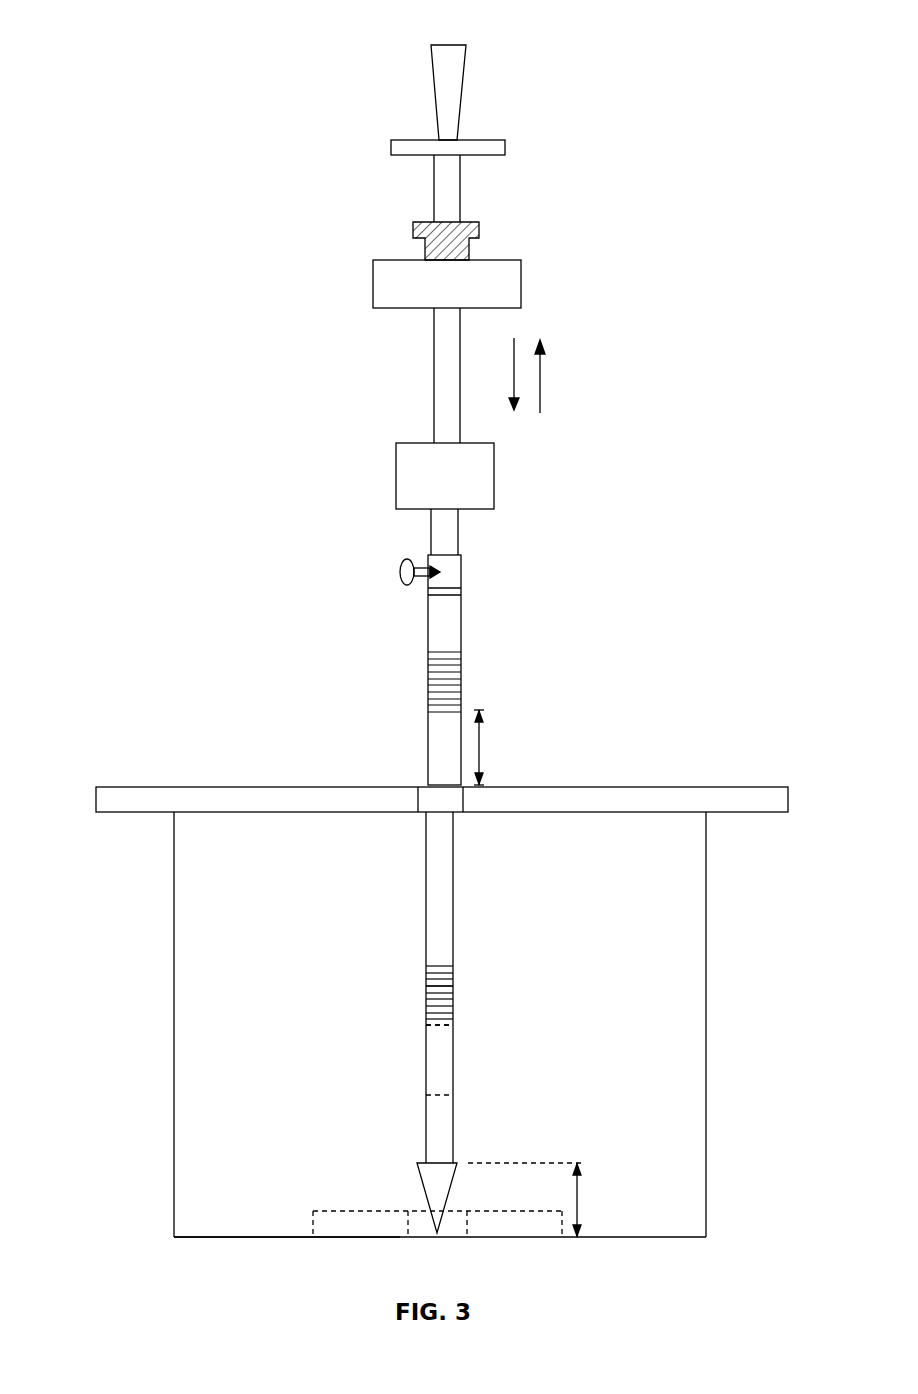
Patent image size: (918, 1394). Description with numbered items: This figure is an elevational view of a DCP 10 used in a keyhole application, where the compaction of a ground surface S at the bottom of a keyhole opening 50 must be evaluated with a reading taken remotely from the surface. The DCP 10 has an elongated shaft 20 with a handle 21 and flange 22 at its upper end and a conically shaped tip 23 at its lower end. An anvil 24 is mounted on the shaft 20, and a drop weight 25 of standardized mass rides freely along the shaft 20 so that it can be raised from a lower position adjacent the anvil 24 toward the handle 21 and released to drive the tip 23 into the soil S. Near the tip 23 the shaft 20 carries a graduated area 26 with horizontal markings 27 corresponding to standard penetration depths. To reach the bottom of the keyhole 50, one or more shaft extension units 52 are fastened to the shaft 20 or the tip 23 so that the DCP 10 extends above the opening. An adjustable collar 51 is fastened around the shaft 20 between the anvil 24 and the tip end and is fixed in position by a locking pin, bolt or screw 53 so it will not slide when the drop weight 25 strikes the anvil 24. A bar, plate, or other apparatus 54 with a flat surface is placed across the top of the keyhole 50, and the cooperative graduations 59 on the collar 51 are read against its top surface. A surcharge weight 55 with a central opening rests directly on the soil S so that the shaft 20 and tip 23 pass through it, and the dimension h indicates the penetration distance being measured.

The DCP 10 is at (276, 38).
The elongated shaft 20 is at (455, 872).
The handle 21 is at (463, 93).
The flange 22 is at (507, 147).
The conically shaped tip 23 is at (443, 1173).
The anvil 24 is at (495, 475).
The drop weight 25 is at (480, 230).
The graduated area 26 is at (462, 966).
The horizontal markings 27 is at (425, 995).
The keyhole opening 50 is at (184, 1021).
The adjustable collar 51 is at (463, 620).
The shaft extension unit 52 is at (438, 1065).
The locking pin, bolt or screw 53 is at (402, 565).
The bar, plate, or other apparatus 54 is at (104, 797).
The surcharge weight 55 is at (310, 1222).
The cooperative graduations 59 is at (419, 655).
The height h is at (480, 748).
The ground surface S is at (180, 1230).